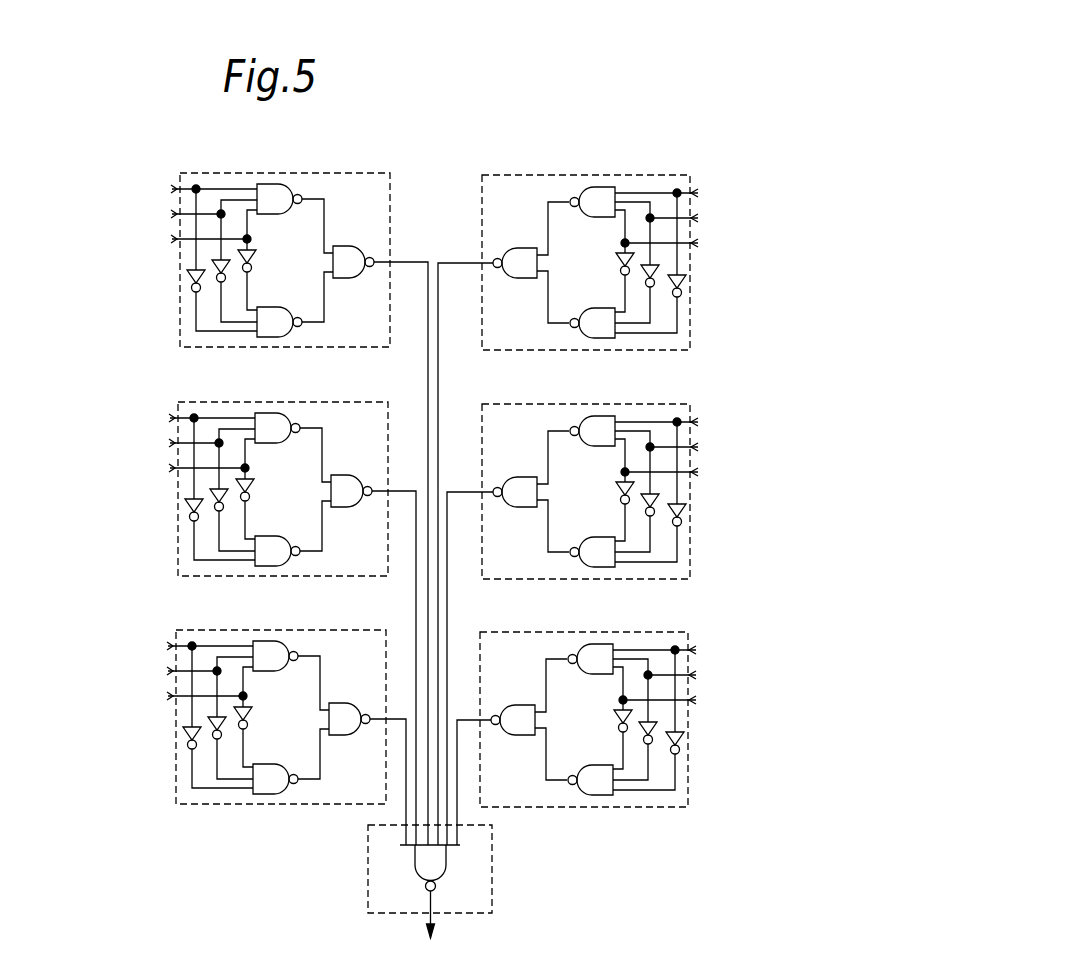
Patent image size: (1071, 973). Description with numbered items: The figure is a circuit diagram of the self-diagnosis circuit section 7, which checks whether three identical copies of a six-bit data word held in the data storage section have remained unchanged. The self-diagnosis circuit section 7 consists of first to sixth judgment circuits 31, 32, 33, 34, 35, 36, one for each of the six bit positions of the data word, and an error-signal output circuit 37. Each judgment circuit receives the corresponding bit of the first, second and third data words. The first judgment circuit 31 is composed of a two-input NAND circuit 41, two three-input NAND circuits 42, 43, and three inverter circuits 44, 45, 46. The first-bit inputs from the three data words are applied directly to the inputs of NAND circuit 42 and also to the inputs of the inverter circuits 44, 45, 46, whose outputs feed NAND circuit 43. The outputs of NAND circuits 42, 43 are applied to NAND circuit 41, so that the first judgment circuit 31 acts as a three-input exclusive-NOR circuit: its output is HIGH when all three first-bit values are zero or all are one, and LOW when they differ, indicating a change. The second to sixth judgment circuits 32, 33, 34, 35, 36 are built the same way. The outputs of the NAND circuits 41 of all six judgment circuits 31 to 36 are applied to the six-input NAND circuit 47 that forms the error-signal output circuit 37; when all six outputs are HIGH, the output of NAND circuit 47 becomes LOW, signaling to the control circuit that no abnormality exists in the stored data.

The self-diagnosis circuit section 7 is at (677, 114).
The first judgment circuit 31 is at (318, 173).
The second judgment circuit 32 is at (206, 472).
The third judgment circuit 33 is at (204, 700).
The fourth judgment circuit 34 is at (630, 175).
The fifth judgment circuit 35 is at (666, 474).
The sixth judgment circuit 36 is at (664, 702).
The error-signal output circuit 37 is at (493, 863).
The NAND circuit 41 is at (338, 246).
The NAND circuit 42 is at (271, 215).
The NAND circuit 43 is at (270, 306).
The inverter circuit 44 is at (188, 276).
The inverter circuit 45 is at (212, 266).
The inverter circuit 46 is at (254, 257).
The NAND circuit 47 is at (422, 871).